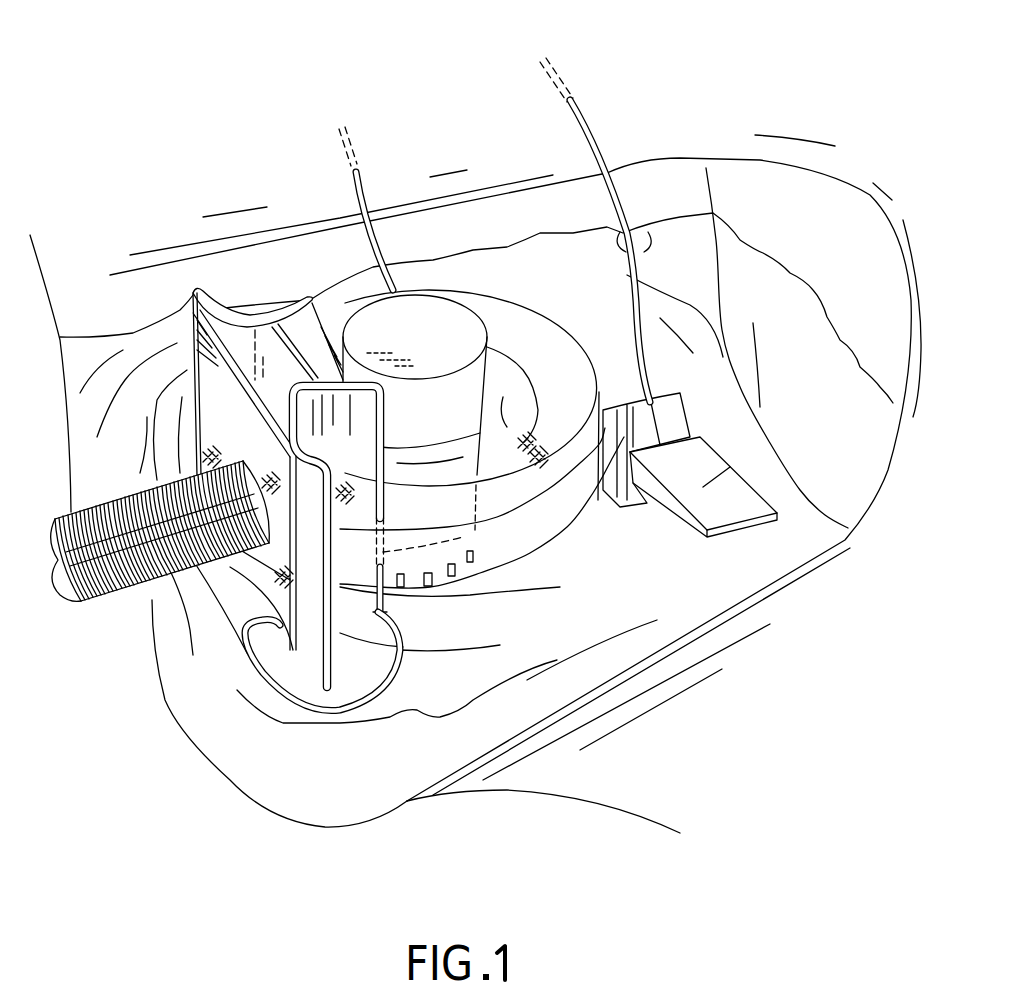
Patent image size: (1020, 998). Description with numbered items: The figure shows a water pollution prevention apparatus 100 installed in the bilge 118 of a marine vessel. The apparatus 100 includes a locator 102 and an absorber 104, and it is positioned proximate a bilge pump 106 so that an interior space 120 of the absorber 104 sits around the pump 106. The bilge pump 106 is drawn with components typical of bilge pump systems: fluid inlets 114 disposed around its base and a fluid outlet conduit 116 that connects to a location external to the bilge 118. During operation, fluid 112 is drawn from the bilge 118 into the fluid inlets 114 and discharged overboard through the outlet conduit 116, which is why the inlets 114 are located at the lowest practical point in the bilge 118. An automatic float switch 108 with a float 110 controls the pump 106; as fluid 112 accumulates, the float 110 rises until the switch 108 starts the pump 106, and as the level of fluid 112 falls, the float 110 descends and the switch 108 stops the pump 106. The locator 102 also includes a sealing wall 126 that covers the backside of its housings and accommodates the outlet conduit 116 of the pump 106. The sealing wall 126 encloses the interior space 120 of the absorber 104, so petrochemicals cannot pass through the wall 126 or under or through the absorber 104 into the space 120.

The water pollution prevention apparatus 100 is at (286, 172).
The locator 102 is at (208, 287).
The absorber 104 is at (498, 300).
The bilge pump 106 is at (420, 298).
The automatic float switch 108 is at (640, 505).
The float 110 is at (747, 523).
The fluid 112 is at (797, 272).
The fluid inlets 114 is at (427, 580).
The fluid outlet conduit 116 is at (98, 600).
The bilge 118 is at (701, 100).
The interior space 120 is at (498, 410).
The sealing wall 126 is at (277, 623).